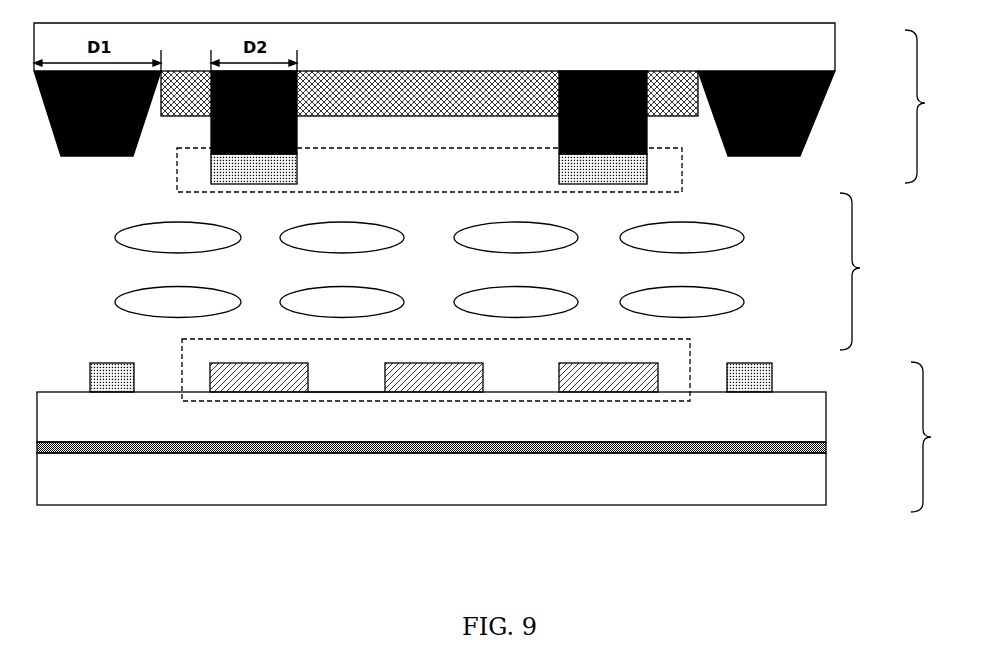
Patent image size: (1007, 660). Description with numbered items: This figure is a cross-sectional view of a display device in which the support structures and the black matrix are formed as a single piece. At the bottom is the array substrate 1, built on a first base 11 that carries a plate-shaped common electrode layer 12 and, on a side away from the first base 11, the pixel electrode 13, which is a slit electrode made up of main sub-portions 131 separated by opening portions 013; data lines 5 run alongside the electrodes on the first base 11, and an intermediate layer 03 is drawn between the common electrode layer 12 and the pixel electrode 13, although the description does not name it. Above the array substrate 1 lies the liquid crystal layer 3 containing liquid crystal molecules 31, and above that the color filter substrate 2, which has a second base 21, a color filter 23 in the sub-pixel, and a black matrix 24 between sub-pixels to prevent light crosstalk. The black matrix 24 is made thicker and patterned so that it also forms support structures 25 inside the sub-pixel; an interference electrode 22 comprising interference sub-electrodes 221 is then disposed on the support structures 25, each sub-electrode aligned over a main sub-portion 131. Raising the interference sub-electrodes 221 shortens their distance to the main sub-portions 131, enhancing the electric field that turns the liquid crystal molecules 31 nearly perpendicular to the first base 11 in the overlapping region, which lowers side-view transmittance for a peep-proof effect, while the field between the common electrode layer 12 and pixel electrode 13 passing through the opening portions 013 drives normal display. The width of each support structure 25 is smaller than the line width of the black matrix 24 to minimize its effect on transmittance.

The array substrate 1 is at (931, 437).
The first base 11 is at (793, 483).
The common electrode layer 12 is at (826, 447).
The planarization / insulating layer 03 is at (803, 417).
The opening portion 013 is at (338, 373).
The pixel electrode 13 is at (690, 346).
The main sub-portion 131 is at (573, 386).
The data line 5 is at (108, 380).
The liquid crystal layer 3 is at (859, 271).
The liquid crystal molecules 31 is at (712, 238).
The color filter substrate 2 is at (924, 106).
The second base 21 is at (812, 43).
The interference electrode 22 is at (682, 170).
The interference sub-electrode 221 is at (297, 166).
The color filter 23 is at (483, 90).
The black matrix 24 is at (823, 97).
The support structure 25 is at (297, 131).